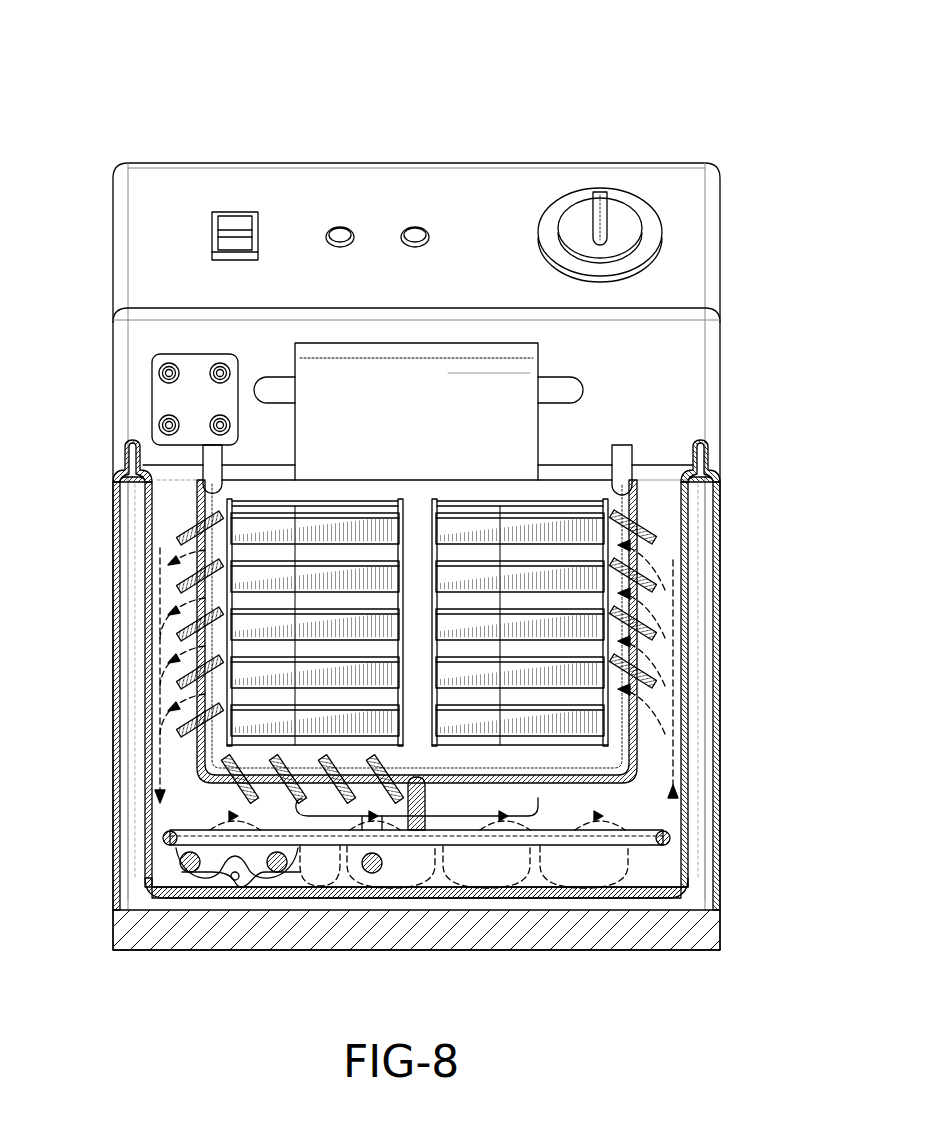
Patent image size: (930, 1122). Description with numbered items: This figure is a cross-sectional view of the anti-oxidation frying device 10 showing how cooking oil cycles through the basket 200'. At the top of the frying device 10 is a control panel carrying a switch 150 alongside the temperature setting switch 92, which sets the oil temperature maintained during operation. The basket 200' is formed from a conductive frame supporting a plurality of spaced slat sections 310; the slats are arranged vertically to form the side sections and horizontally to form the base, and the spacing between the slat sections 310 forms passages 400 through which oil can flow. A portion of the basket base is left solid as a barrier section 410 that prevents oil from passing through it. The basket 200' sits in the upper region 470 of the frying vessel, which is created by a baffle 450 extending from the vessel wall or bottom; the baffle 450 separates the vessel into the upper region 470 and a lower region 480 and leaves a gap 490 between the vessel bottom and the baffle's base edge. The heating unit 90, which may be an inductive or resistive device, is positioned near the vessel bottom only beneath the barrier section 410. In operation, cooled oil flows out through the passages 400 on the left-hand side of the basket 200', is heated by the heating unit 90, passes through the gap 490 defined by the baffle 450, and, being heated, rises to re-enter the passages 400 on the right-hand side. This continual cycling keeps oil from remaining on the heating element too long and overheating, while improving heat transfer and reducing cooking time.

The anti-oxidation frying device 10 is at (134, 106).
The power switch 150 is at (238, 228).
The temperature setting switch 92 is at (603, 210).
The basket 200' is at (333, 605).
The upper region 470 is at (655, 503).
The slat sections 310 is at (185, 530).
The passages 400 is at (175, 556).
The barrier section 410 is at (522, 766).
The baffle 450 is at (410, 822).
The lower region 480 is at (364, 865).
The heating unit 90 is at (186, 866).
The gap 490 is at (468, 850).